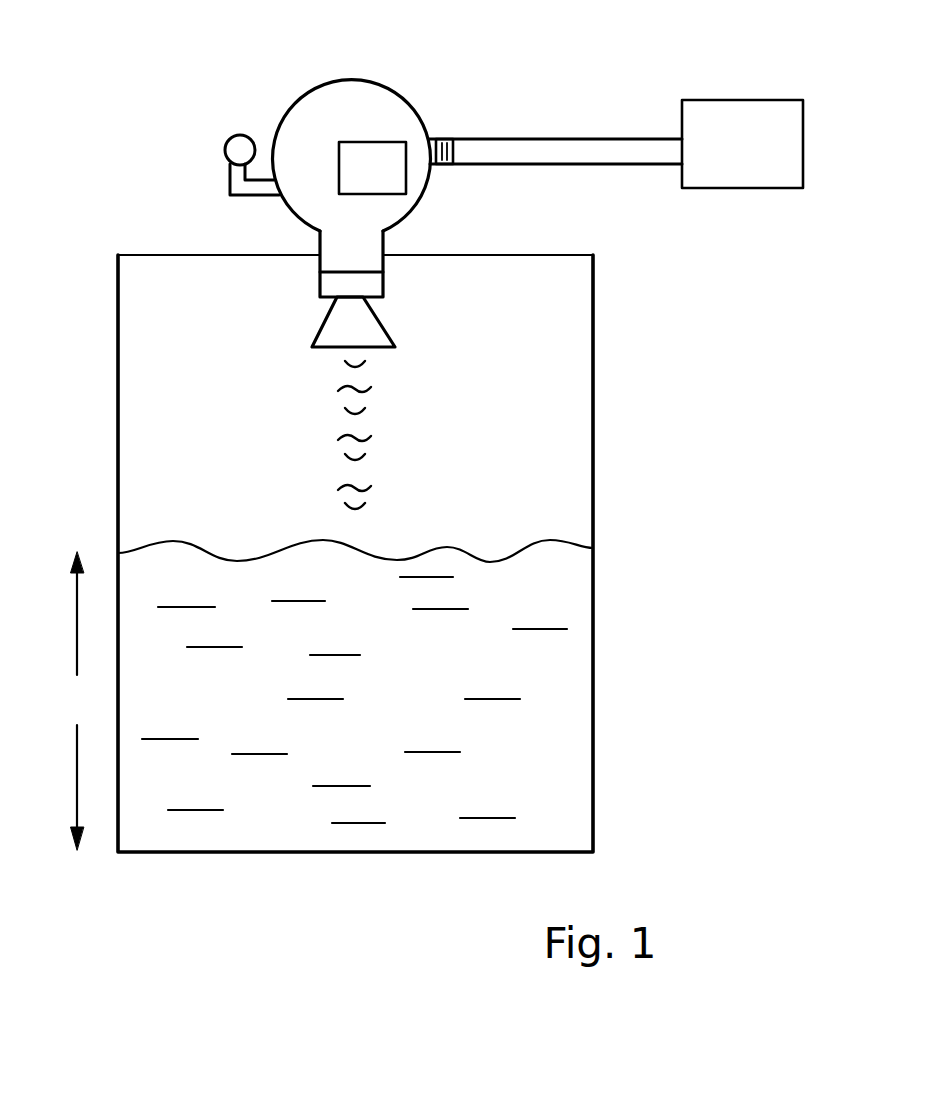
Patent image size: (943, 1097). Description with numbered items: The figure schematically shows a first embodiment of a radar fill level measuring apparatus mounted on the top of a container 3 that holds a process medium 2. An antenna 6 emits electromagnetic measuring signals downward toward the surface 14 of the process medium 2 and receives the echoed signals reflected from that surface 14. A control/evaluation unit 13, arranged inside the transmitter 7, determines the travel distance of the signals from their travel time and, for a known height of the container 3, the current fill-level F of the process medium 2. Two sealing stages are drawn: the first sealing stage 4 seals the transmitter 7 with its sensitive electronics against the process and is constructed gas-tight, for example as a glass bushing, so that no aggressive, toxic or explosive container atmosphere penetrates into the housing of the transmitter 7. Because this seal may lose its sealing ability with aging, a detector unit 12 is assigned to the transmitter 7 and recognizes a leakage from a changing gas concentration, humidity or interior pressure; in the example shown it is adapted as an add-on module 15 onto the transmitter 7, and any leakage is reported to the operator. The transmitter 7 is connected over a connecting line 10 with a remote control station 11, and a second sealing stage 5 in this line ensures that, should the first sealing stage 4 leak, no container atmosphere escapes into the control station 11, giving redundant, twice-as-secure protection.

The process medium 2 is at (446, 664).
The container 3 is at (593, 468).
The first sealing stage 4 is at (368, 282).
The second sealing stage 5 is at (447, 140).
The antenna 6 is at (382, 318).
The transmitter 7 is at (317, 105).
The connecting line 10 is at (570, 140).
The control station 11 is at (731, 159).
The detector unit 12 is at (180, 165).
The control/evaluation unit 13 is at (358, 183).
The surface 14 is at (493, 558).
The add-on module 15 is at (240, 150).
The fill-level F is at (76, 701).